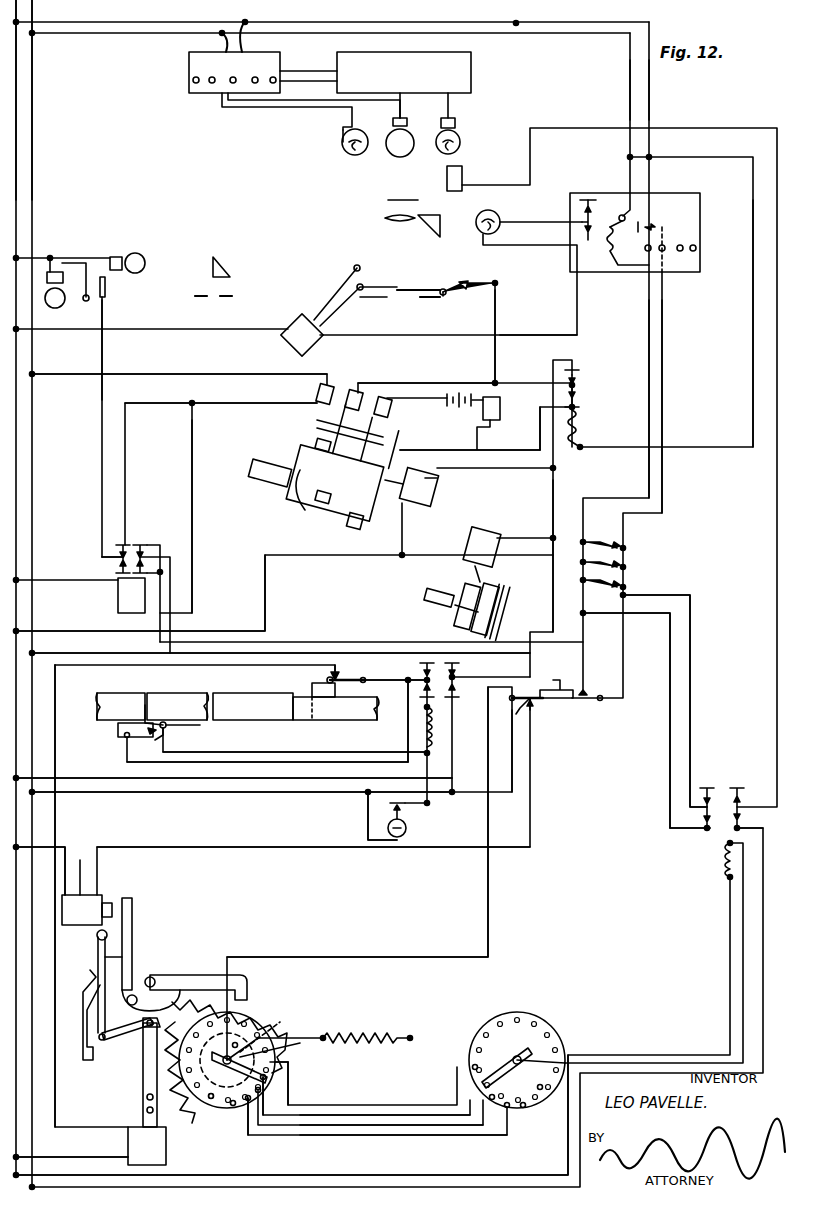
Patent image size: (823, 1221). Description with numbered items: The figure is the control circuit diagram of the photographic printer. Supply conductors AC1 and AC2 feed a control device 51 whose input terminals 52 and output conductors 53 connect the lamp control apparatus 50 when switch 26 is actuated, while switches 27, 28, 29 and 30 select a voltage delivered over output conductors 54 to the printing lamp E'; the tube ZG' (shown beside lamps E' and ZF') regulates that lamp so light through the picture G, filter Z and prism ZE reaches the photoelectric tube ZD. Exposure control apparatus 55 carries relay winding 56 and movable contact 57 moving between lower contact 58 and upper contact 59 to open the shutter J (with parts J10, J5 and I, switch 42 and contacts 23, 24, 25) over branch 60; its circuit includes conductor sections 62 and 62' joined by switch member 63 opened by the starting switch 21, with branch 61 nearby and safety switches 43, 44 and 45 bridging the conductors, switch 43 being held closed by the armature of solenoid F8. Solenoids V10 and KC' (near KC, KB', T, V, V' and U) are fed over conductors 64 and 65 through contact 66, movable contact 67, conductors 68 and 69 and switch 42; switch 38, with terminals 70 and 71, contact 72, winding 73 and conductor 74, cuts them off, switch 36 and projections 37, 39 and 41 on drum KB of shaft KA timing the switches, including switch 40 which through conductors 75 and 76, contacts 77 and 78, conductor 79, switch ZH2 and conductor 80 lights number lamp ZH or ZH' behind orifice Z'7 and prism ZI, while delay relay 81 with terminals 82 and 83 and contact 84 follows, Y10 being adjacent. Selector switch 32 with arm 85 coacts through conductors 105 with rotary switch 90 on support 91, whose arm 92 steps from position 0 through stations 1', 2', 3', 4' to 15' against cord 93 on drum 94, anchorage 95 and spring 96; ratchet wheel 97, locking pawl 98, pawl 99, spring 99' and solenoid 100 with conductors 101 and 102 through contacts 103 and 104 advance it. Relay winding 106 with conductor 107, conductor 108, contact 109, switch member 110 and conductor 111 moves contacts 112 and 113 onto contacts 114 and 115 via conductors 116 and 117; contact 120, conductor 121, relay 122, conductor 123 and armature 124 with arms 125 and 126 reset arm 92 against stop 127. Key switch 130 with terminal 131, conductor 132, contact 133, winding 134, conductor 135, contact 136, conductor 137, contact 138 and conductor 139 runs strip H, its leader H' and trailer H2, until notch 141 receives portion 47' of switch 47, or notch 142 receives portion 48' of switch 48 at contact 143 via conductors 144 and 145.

The input terminals 52 is at (233, 27).
The control device 51 is at (189, 56).
The control apparatus 50 is at (418, 76).
The printing lamp control switch 30 is at (193, 81).
The printing lamp control switch 29 is at (210, 84).
The printing lamp control switch 28 is at (231, 84).
The printing lamp control switch 27 is at (258, 77).
The printing lamp control switch 26 is at (276, 78).
The exposure time regulation switch 25 is at (665, 245).
The exposure time regulation switch 24 is at (696, 248).
The exposure time regulation switch 23 is at (683, 246).
The output conductors 53 is at (318, 100).
The output conductors 54 is at (310, 107).
The control apparatus 55 is at (665, 193).
The relay winding 56 is at (612, 260).
The movable relay contact 57 is at (629, 212).
The stationary lower contact 58 is at (586, 230).
The stationary upper contact 59 is at (590, 200).
The branch of supply conductor AC1 60 is at (630, 94).
The branch of supply conductor AC2 61 is at (651, 100).
The conductor section 62 is at (431, 471).
The conductor section 62' is at (684, 406).
The switch member 63 is at (602, 700).
The conductor 64 is at (232, 631).
The conductor 65 is at (553, 506).
The upper stationary contact 66 is at (578, 370).
The movable contact 67 is at (577, 388).
The conductor 68 is at (495, 352).
The conductor 69 is at (515, 282).
The terminal 70 is at (428, 383).
The terminal 71 is at (526, 450).
The stationary contact 72 is at (578, 405).
The relay winding 73 is at (580, 430).
The conductor 74 is at (753, 315).
The conductor 75 is at (218, 374).
The conductor 76 is at (230, 403).
The upper stationary contact 77 is at (128, 545).
The movable contact 78 is at (120, 560).
The conductor 79 is at (105, 300).
The conductor 80 is at (80, 258).
The relay device 81 is at (118, 605).
The terminal 82 is at (50, 582).
The terminal 83 is at (193, 550).
The movable relay contact 84 is at (145, 555).
The switch arm 85 is at (500, 1045).
The second rotary switch 90 is at (280, 1036).
The support 91 is at (143, 1053).
The switch arm 92 is at (272, 1070).
The cord 93 is at (270, 1050).
The drum portion 94 is at (278, 1020).
The stationary anchorage 95 is at (410, 1036).
The tension spring 96 is at (365, 1036).
The ratchet wheel 97 is at (227, 980).
The locking pawl 98 is at (203, 980).
The pawl 99 is at (127, 1075).
The spring 99' is at (79, 1015).
The solenoid 100 is at (160, 1155).
The conductor 101 is at (102, 1157).
The conductor 102 is at (55, 1097).
The relay switch contact 103 is at (435, 666).
The relay switch contact 104 is at (458, 680).
The conductor 105 is at (335, 1137).
The relay winding 106 is at (718, 865).
The conductor 107 is at (437, 1176).
The conductor 108 is at (488, 718).
The contact 109 is at (527, 690).
The pivoted switch member 110 is at (540, 712).
The conductor 111 is at (512, 780).
The movable contact member 112 is at (710, 800).
The movable contact member 113 is at (742, 800).
The stationary lower contact 114 is at (700, 830).
The stationary lower contact 115 is at (748, 828).
The conductor 116 is at (690, 722).
The conductor 117 is at (670, 813).
The contact 120 is at (532, 710).
The conductor 121 is at (168, 850).
The electro-magnetic relay 122 is at (80, 870).
The conductor 123 is at (63, 847).
The pivoted armature 124 is at (128, 907).
The arm 125 is at (185, 977).
The arm 126 is at (110, 957).
The stop 127 is at (237, 1042).
The special switch 130 is at (406, 830).
The terminal 131 is at (368, 820).
The conductor 132 is at (428, 804).
The stationary relay contact 133 is at (405, 730).
The relay winding 134 is at (445, 735).
The conductor 135 is at (263, 778).
The movable relay contact 136 is at (445, 666).
The conductor 137 is at (392, 709).
The switch contact 138 is at (340, 668).
The conductor 139 is at (124, 653).
The notch 141 is at (312, 690).
The notch 142 is at (145, 705).
The switch contact 143 is at (118, 735).
The conductor 144 is at (270, 748).
The conductor 145 is at (322, 748).
The starting switch 21 is at (570, 700).
The selector switch 32 is at (518, 1055).
The switch 36 is at (375, 430).
The projection 37 is at (347, 505).
The switch 38 is at (320, 431).
The projection 39 is at (322, 505).
The switch 40 is at (317, 421).
The projection 41 is at (315, 446).
The switch 42 is at (462, 280).
The safety switch 43 is at (615, 585).
The safety switch 44 is at (615, 565).
The safety switch 45 is at (615, 546).
The switch 47 is at (394, 669).
The strip engaging portion 47' is at (328, 672).
The switch 48 is at (172, 737).
The strip edge engaging portion 48' is at (197, 734).
The supply conductor AC1 is at (32, 95).
The supply conductor AC2 is at (16, 118).
The photoelectric tube ZG' is at (333, 148).
The printing lamp E' is at (410, 134).
The lamp ZF' is at (468, 140).
The solenoid F8 is at (447, 180).
The picture G is at (385, 200).
The lens Z is at (374, 220).
The prism ZE is at (428, 232).
The photoelectric tube ZD is at (498, 215).
The number printing lamp ZH is at (132, 249).
The manual switch ZH2 is at (106, 286).
The number printing lamp ZH' is at (67, 292).
The prism ZI is at (221, 258).
The orifice Z'7 is at (229, 289).
The solenoid J10 is at (303, 318).
The shutter J is at (415, 290).
The contact J5 is at (444, 296).
The contact I is at (395, 300).
The battery block Y10 is at (500, 408).
The driving shaft KA is at (255, 480).
The drum KB is at (270, 493).
The stop KB' is at (366, 529).
The solenoid KC is at (412, 477).
The solenoid KC' is at (447, 485).
The solenoid V10 is at (478, 530).
The valve V' is at (458, 598).
The valve V is at (446, 616).
The drive shaft T is at (425, 597).
The plates U is at (502, 610).
The strip H is at (177, 690).
The leader H' is at (295, 722).
The trailer H2 is at (97, 715).
The final station 15' is at (196, 1123).
The initial position 0 is at (232, 1107).
The station 1' is at (236, 1132).
The station 2' is at (253, 1126).
The station 3' is at (283, 1089).
The station 4' is at (317, 1081).